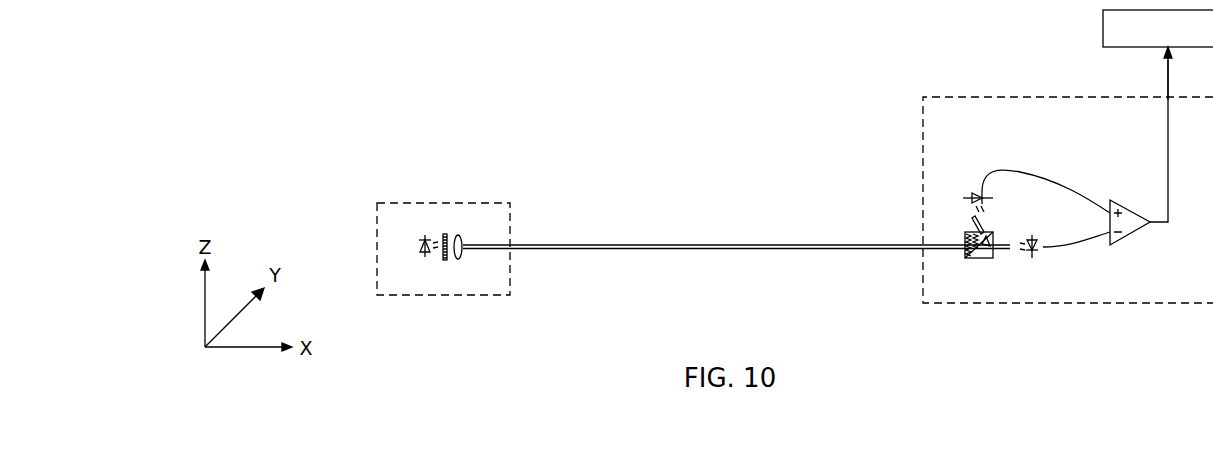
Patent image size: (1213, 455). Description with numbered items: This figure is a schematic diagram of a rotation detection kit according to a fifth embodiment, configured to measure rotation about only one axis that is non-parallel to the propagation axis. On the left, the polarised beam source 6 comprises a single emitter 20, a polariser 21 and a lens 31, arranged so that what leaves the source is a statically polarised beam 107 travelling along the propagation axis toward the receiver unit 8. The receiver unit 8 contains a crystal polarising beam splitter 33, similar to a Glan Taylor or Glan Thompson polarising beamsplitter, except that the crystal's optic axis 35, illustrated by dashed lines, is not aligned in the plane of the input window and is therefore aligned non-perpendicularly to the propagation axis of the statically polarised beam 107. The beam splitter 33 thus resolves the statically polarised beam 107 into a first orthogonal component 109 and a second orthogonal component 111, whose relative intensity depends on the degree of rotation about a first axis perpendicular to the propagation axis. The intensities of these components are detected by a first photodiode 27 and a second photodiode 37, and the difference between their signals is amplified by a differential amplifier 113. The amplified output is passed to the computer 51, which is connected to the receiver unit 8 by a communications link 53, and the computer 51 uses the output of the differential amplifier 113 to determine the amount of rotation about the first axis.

The polarised beam source 6 is at (447, 203).
The emitter 20 is at (422, 256).
The polariser 21 is at (445, 262).
The lens 31 is at (463, 260).
The statically polarised beam 107 is at (685, 250).
The receiver unit 8 is at (1205, 305).
The crystal polarising beam splitter 33 is at (968, 258).
The first orthogonal component 109 is at (1003, 260).
The second orthogonal component 111 is at (965, 224).
The optic axis 35 is at (965, 233).
The second photodiode 37 is at (965, 197).
The first photodiode 27 is at (1028, 262).
The differential amplifier 113 is at (1130, 235).
The computer 51 is at (1102, 22).
The communications link 53 is at (1166, 83).